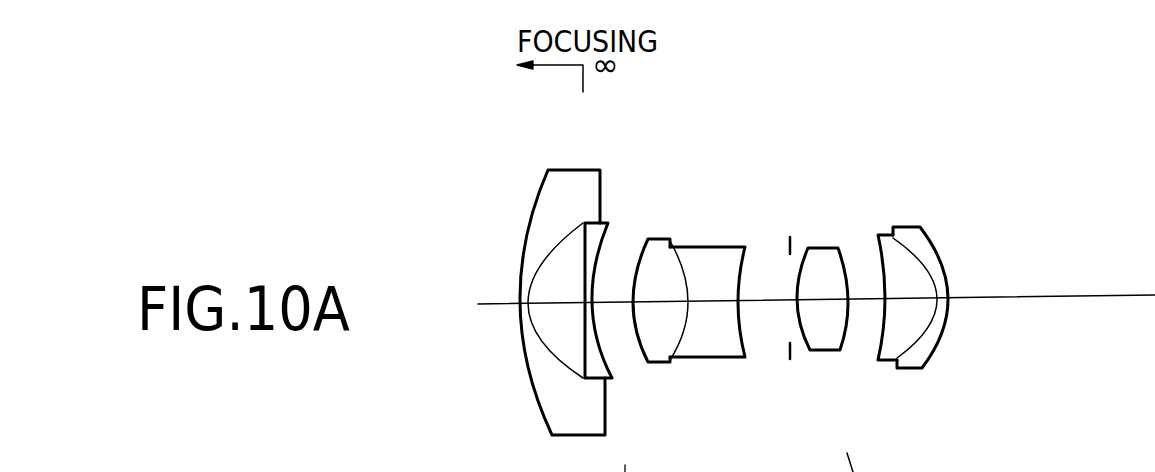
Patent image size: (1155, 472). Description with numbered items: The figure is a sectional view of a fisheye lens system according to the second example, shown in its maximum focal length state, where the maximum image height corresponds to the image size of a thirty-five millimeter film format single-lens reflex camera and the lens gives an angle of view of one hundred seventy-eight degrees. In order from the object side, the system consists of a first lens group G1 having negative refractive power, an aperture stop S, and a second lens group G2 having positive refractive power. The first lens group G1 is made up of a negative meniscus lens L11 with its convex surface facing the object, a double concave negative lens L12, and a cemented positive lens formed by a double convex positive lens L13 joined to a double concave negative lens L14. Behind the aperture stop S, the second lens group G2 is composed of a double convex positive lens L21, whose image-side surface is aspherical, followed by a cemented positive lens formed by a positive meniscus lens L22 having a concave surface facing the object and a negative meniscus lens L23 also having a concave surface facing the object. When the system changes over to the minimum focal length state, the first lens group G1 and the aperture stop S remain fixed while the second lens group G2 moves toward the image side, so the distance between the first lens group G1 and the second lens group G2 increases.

The first lens group G1 is at (800, 100).
The second lens group G2 is at (927, 148).
The negative meniscus lens L11 is at (572, 170).
The double concave negative lens L12 is at (607, 223).
The double convex positive lens L13 is at (660, 238).
The double concave negative lens L14 is at (722, 247).
The aperture stop S is at (790, 237).
The double convex positive lens L21 is at (825, 247).
The positive meniscus lens L22 is at (882, 235).
The negative meniscus lens L23 is at (907, 227).